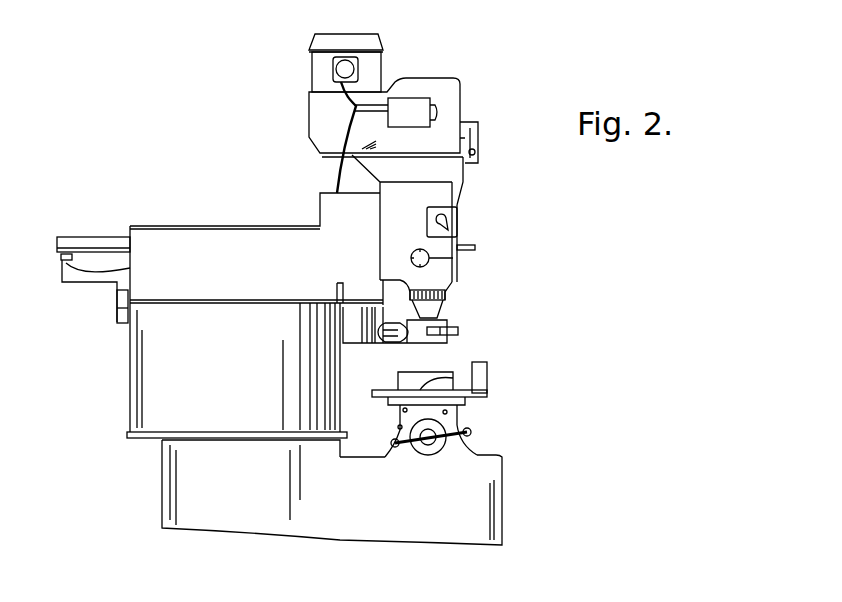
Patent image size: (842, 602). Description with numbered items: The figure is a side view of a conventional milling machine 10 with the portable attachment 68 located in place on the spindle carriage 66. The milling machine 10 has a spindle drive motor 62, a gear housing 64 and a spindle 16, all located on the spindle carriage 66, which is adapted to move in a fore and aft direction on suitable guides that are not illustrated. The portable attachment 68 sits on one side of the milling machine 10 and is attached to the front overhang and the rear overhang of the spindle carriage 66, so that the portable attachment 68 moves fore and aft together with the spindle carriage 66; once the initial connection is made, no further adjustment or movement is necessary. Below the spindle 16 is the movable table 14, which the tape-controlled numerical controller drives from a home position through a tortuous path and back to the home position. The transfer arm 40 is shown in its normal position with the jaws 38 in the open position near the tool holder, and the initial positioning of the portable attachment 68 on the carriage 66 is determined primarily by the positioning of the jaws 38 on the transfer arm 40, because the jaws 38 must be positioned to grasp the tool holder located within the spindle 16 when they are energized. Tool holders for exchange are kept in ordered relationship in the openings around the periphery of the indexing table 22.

The milling machine 10 is at (465, 95).
The movable table 14 is at (465, 406).
The spindle 16 is at (441, 313).
The indexing table 22 is at (420, 321).
The jaws 38 is at (459, 332).
The transfer arm 40 is at (403, 347).
The spindle drive motor 62 is at (312, 73).
The gear housing 64 is at (416, 78).
The spindle carriage 66 is at (108, 237).
The portable attachment 68 is at (122, 425).